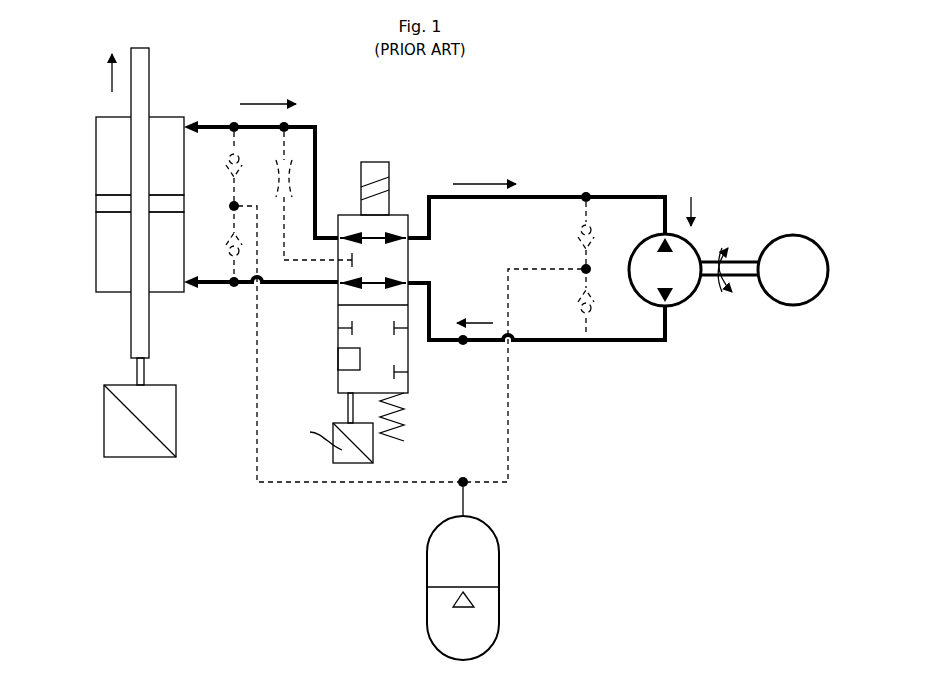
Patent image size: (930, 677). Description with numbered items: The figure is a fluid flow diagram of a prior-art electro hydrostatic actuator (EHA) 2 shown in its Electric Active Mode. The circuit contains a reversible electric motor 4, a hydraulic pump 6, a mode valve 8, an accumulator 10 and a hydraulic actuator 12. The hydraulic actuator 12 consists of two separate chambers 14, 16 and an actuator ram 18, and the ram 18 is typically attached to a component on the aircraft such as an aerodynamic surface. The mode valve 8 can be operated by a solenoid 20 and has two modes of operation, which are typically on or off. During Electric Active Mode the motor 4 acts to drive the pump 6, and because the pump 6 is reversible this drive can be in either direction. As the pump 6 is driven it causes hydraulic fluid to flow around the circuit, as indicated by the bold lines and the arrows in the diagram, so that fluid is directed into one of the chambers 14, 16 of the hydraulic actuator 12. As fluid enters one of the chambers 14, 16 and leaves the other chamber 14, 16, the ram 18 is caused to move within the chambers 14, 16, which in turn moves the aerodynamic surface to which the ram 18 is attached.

The electro hydrostatic actuator 2 is at (566, 162).
The reversible electric motor 4 is at (800, 243).
The hydraulic pump 6 is at (687, 282).
The mode valve 8 is at (358, 278).
The accumulator 10 is at (483, 554).
The hydraulic actuator 12 is at (113, 252).
The chamber 14 is at (106, 140).
The chamber 16 is at (110, 272).
The actuator ram 18 is at (148, 70).
The solenoid 20 is at (375, 168).